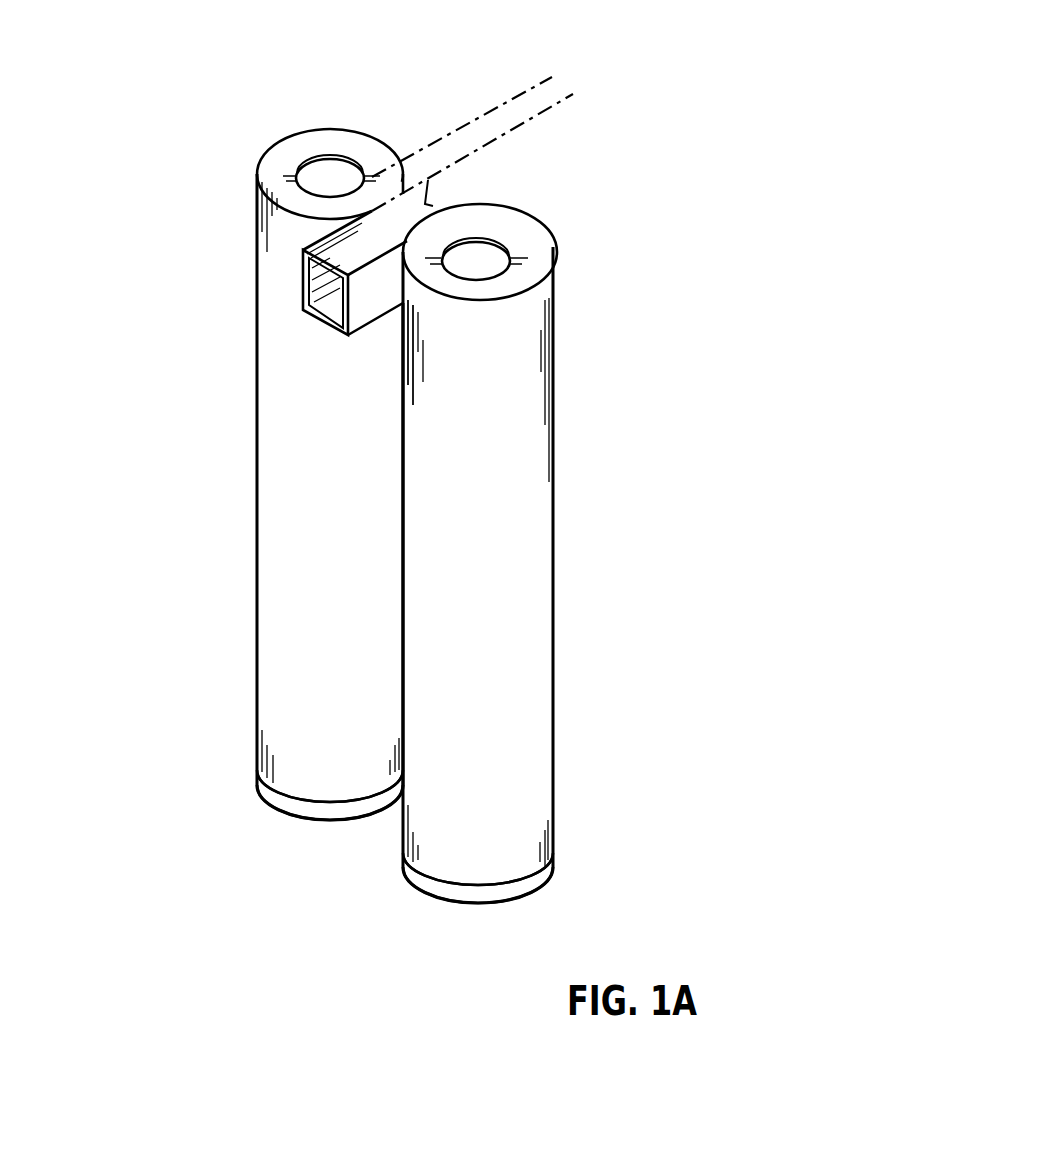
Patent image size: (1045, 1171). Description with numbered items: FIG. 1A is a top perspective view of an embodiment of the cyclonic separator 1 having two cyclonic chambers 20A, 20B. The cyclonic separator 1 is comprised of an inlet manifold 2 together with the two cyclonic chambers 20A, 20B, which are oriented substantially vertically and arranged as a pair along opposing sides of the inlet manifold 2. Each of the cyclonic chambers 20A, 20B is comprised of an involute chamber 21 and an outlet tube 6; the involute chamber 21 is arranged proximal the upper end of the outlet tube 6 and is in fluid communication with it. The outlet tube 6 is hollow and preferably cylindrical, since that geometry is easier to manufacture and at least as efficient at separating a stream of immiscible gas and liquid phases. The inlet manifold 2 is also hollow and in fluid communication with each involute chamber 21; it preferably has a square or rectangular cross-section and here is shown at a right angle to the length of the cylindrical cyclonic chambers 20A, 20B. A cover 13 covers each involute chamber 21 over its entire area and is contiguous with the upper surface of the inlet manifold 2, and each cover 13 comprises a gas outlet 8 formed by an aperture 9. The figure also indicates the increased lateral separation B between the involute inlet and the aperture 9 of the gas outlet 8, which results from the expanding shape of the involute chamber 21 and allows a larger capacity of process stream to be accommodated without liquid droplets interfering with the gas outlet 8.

The cyclonic separator 1 is at (650, 45).
The inlet manifold 2 is at (232, 118).
The outlet tube 6 is at (280, 489).
The gas outlet 8 is at (331, 190).
The aperture 9 is at (360, 158).
The cover 13 is at (275, 187).
The cyclonic chamber 20A is at (210, 536).
The cyclonic chamber 20B is at (630, 544).
The involute chamber 21 is at (528, 318).
The lateral separation B is at (520, 83).